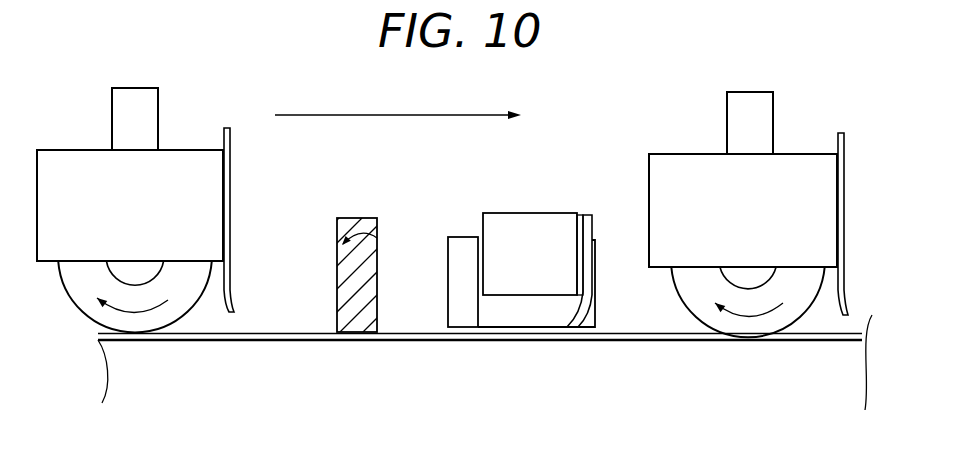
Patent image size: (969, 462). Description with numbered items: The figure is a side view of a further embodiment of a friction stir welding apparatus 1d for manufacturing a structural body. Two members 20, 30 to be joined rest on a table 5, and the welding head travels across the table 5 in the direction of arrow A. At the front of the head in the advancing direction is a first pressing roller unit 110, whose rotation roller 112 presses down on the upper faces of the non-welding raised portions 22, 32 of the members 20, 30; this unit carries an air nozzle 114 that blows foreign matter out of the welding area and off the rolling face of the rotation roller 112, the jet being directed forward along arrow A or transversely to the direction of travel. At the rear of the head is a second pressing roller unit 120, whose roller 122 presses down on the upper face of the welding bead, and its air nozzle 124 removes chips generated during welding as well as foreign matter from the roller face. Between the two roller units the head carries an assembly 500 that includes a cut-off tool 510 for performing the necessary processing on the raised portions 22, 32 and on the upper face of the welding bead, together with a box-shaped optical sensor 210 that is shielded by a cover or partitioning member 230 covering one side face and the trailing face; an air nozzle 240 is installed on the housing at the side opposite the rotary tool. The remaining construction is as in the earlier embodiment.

The friction stir welding apparatus 1d is at (575, 97).
The first pressing roller unit 110 is at (802, 167).
The rotation roller 112 is at (697, 310).
The air nozzle 114 is at (847, 288).
The second pressing roller unit 120 is at (182, 163).
The developing roller 122 is at (163, 313).
The air nozzle 124 is at (231, 210).
The cleaning unit 500 is at (607, 168).
The cut-off tool 510 is at (337, 272).
The optical sensor 210 is at (533, 227).
The cover 230 is at (463, 247).
The air nozzle 240 is at (582, 327).
The table 5 is at (405, 392).
The member 20 is at (480, 385).
The member 30 is at (777, 376).
The non-welding raised portion 22 is at (512, 351).
The non-welding raised portion 32 is at (512, 351).